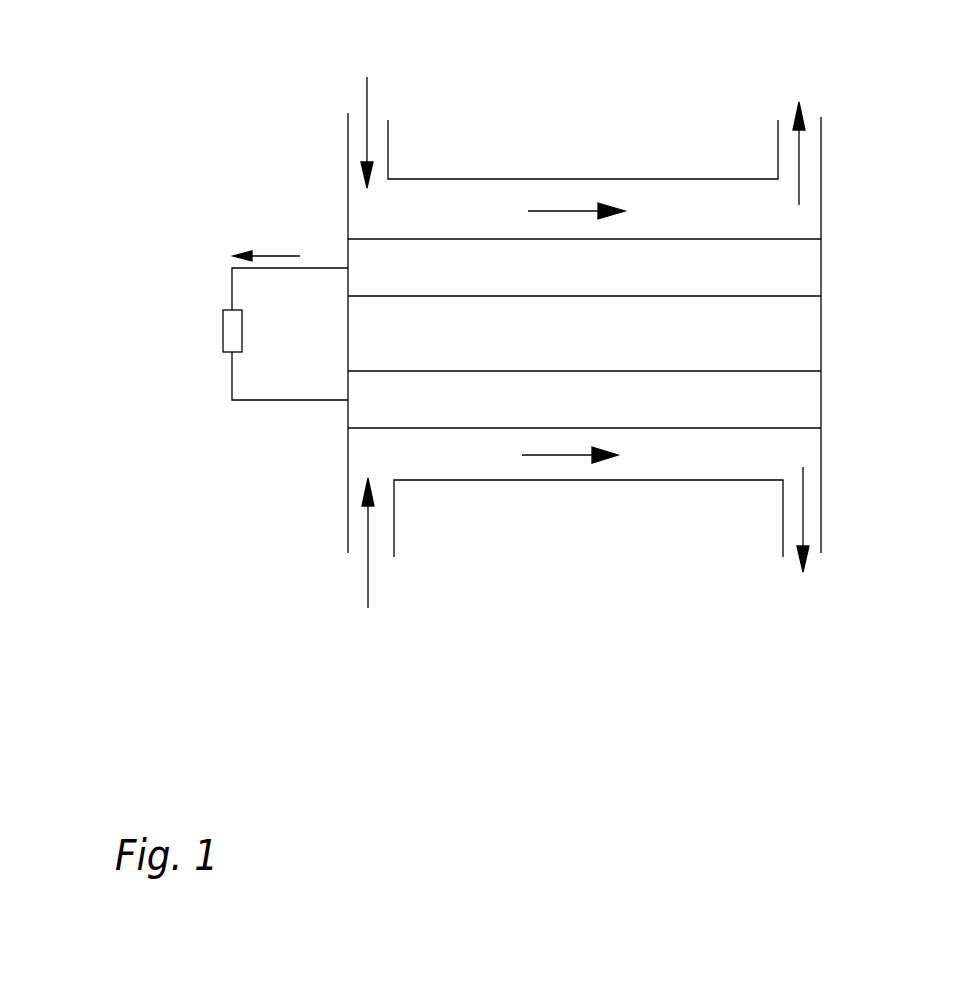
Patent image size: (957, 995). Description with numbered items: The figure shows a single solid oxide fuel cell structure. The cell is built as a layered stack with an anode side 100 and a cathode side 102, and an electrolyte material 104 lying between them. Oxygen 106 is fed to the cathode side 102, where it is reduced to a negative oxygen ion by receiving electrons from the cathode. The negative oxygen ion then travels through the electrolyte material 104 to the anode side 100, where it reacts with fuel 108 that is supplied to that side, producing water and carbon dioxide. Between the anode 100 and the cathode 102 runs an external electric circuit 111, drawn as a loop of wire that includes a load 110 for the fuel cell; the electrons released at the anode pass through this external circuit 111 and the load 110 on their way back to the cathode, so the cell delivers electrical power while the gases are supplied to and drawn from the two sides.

The anode side 100 is at (790, 261).
The cathode side 102 is at (787, 393).
The electrolyte material 104 is at (793, 327).
The oxygen 106 is at (368, 593).
The fuel 108 is at (367, 90).
The load 110 is at (223, 334).
The external electric circuit 111 is at (210, 255).